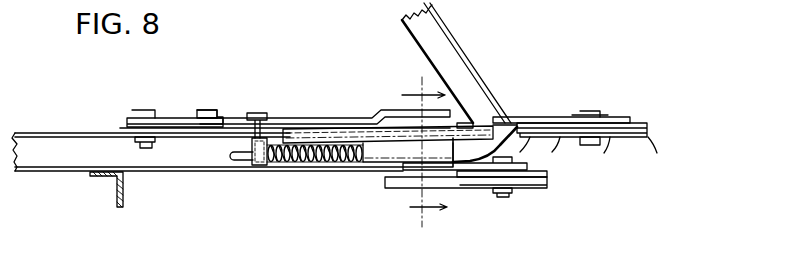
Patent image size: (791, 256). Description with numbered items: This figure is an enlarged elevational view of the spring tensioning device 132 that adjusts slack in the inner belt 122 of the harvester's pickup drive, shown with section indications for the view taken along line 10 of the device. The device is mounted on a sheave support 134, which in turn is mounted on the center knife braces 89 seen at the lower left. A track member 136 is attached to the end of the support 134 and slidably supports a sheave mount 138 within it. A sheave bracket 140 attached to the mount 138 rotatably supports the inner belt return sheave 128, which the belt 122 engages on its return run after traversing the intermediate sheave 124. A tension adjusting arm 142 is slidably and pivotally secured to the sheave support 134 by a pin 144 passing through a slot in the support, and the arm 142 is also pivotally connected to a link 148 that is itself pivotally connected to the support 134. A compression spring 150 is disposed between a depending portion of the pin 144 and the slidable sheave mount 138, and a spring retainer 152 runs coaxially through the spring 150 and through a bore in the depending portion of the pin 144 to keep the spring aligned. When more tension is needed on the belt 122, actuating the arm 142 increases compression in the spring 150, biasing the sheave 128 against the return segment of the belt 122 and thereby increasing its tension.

The section line 10- 10 is at (421, 152).
The center knife brace 89 is at (117, 180).
The inner belt 122 is at (394, 183).
The intermediate sheave 124 is at (632, 124).
The inner belt return sheave 128 is at (523, 178).
The spring tensioning device 132 is at (233, 102).
The sheave support 134 is at (157, 158).
The track member 136 is at (485, 125).
The sheave mount 138 is at (372, 154).
The sheave bracket 140 is at (530, 166).
The tension adjusting arm 142 is at (318, 118).
The pin 144 is at (255, 114).
The link 148 is at (168, 118).
The compression spring 150 is at (297, 163).
The spring retainer 152 is at (238, 159).